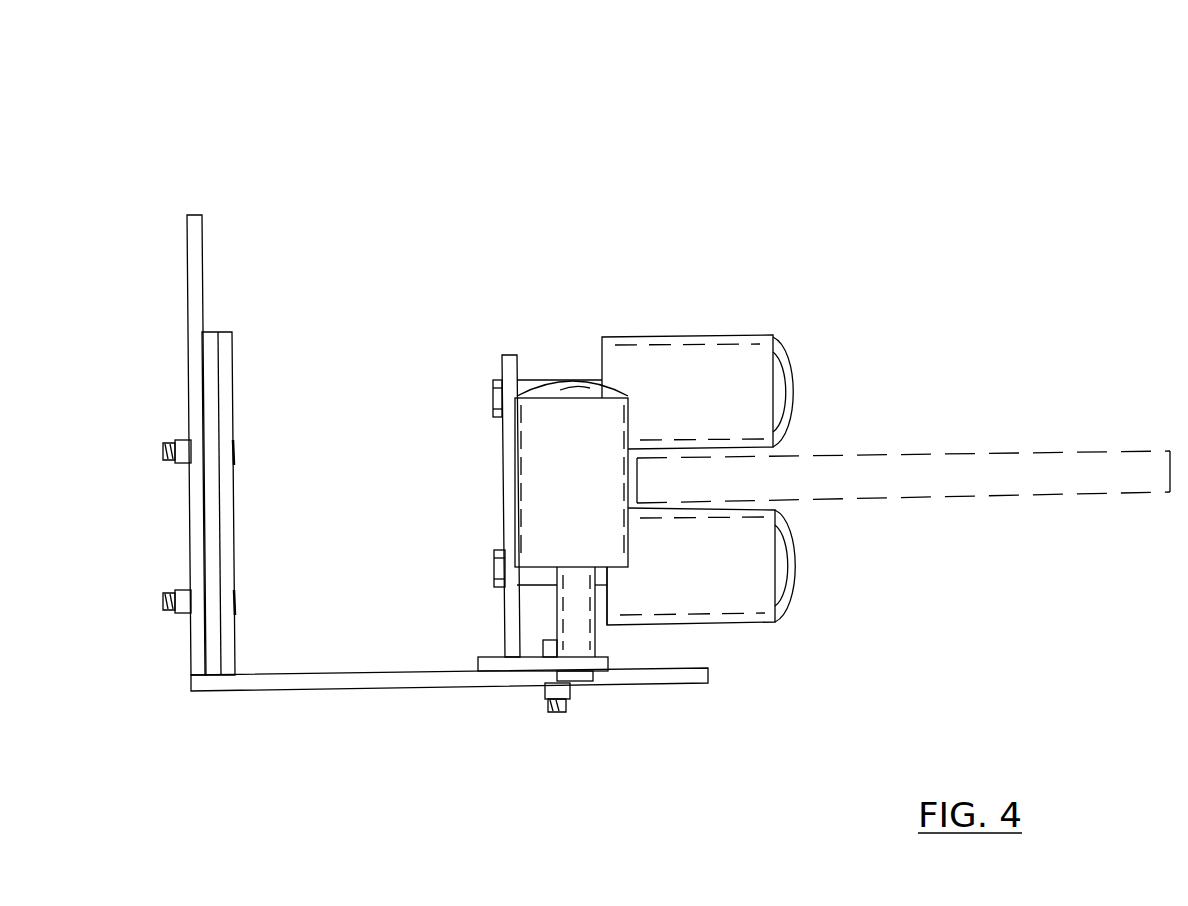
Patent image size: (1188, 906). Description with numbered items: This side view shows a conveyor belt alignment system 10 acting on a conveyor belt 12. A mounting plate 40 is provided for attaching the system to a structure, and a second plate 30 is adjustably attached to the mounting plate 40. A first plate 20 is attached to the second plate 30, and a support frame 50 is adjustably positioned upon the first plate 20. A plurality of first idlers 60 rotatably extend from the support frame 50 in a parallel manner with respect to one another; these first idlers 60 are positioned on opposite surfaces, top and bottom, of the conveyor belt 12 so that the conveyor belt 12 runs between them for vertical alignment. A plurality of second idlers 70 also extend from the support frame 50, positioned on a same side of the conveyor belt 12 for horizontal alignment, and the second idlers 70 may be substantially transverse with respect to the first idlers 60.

The conveyor belt alignment system 10 is at (990, 142).
The conveyor belt 12 is at (928, 451).
The first plate 20 is at (678, 676).
The second plate 30 is at (192, 247).
The mounting plate 40 is at (208, 355).
The support frame 50 is at (507, 365).
The first idlers 60 is at (690, 345).
The second idlers 70 is at (524, 454).